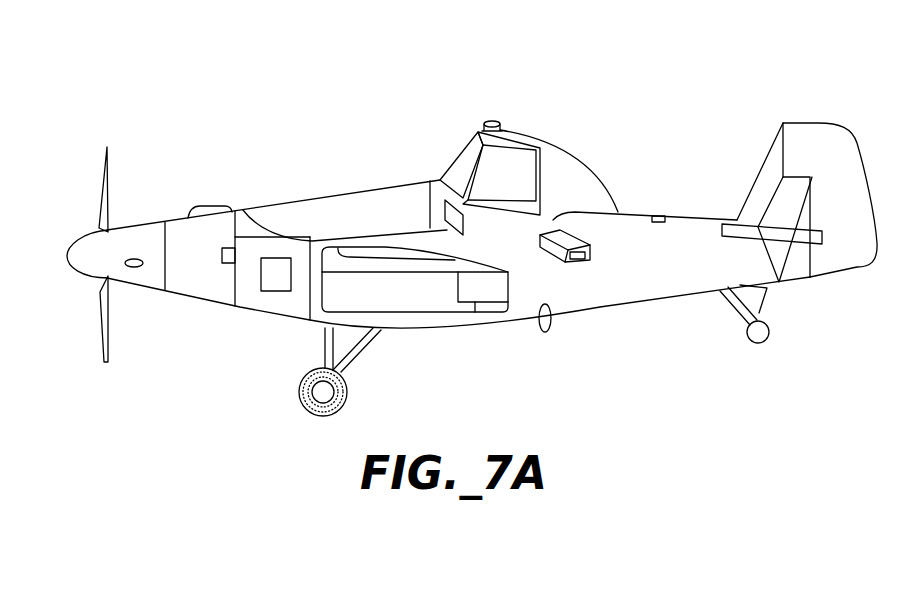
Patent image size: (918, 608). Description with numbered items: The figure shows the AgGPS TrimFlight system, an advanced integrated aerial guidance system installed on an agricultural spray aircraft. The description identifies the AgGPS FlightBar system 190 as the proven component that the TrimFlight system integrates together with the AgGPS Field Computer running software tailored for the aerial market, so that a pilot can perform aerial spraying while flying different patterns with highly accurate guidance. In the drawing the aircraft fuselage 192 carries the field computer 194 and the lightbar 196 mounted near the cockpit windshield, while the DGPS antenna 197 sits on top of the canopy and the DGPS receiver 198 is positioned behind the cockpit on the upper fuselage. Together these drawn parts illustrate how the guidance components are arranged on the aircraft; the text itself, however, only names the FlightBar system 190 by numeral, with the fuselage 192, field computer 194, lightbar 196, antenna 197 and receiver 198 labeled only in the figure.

The AgGPS 132 FlightBar system 190 is at (124, 419).
The aircraft fuselage 192 is at (207, 304).
The AgGPS 170 field computer 194 is at (440, 212).
The lightbar 196 is at (443, 177).
The DGPS antenna 197 is at (490, 121).
The AgGPS 132 DGPS receiver 198 is at (585, 243).